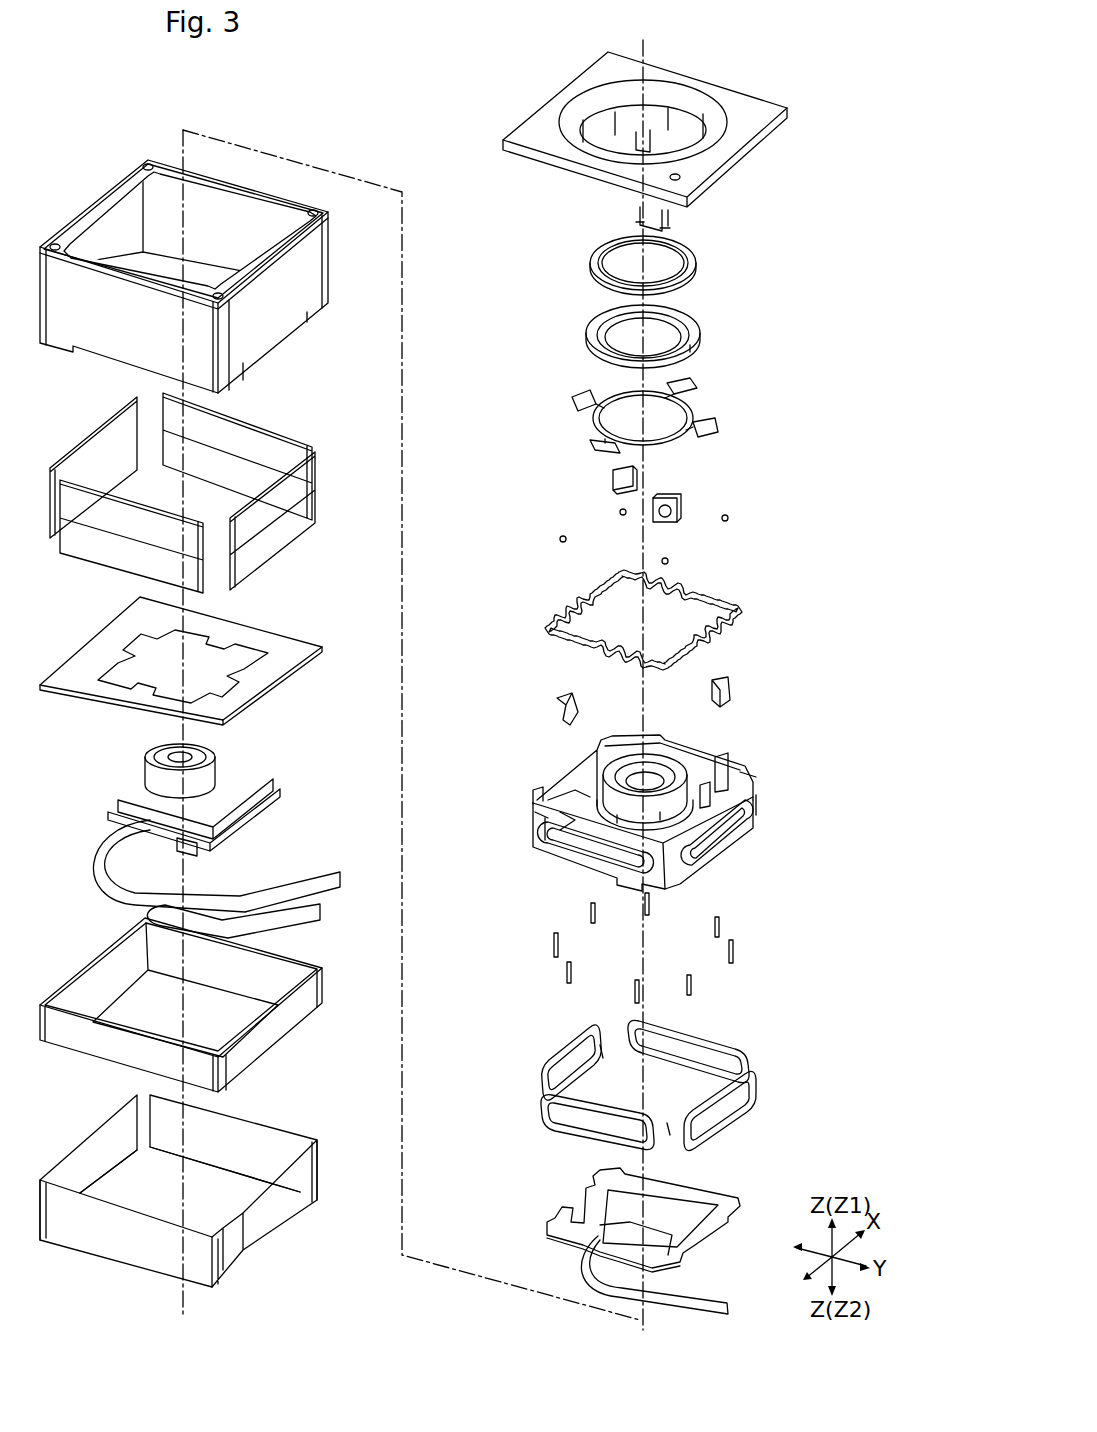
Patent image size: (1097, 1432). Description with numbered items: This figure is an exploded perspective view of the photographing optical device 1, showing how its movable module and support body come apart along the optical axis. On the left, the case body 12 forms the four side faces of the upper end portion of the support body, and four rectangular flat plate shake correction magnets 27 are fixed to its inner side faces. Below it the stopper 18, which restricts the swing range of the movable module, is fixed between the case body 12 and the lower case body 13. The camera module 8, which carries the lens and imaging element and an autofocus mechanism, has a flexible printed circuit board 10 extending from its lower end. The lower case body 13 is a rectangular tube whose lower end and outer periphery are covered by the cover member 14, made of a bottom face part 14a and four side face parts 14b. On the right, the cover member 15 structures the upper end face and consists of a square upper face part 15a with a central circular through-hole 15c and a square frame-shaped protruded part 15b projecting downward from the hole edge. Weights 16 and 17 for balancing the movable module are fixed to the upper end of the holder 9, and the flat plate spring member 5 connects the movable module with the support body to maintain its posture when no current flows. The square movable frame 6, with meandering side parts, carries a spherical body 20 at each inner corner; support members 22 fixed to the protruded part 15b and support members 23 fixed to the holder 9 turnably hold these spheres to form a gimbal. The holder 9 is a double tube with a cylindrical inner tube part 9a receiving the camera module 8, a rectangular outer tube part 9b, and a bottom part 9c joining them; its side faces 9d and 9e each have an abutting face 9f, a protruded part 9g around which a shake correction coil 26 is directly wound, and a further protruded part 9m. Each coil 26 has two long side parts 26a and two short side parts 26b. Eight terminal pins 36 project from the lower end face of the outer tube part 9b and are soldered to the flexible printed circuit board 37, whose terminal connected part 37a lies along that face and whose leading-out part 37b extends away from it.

The photographing optical device 1 is at (86, 88).
The case body 12 is at (330, 263).
The shake correction magnet 27 is at (85, 430).
The stopper 18 is at (297, 637).
The camera module 8 is at (223, 763).
The flexible printed circuit board 10 is at (310, 868).
The lower case body 13 is at (297, 1033).
The cover member 14 is at (186, 1176).
The bottom face part 14a is at (160, 1195).
The side face part 14b is at (72, 1176).
The cover member 15 is at (674, 139).
The upper face part 15a is at (540, 107).
The protruded part 15b is at (603, 147).
The through-hole 15c is at (677, 107).
The weight 16 is at (703, 263).
The weight 17 is at (703, 332).
The spring member 5 is at (717, 428).
The support member 22 is at (612, 477).
The spherical body 20 is at (619, 512).
The movable frame 6 is at (740, 612).
The support member 23 is at (552, 702).
The holder 9 is at (646, 793).
The inner tube part 9a is at (618, 740).
The outer tube part 9b is at (646, 793).
The bottom part 9c is at (583, 795).
The side face 9d is at (540, 817).
The side face 9e is at (805, 764).
The abutting face 9f is at (763, 790).
The protruded part 9g is at (757, 790).
The protruded part 9m is at (750, 820).
The terminal pin 36 is at (590, 910).
The shake correction coil 26 is at (648, 1089).
The long side part 26a is at (573, 1052).
The short side part 26b is at (608, 1043).
The flexible printed circuit board 37 is at (599, 1241).
The terminal connected part 37a is at (542, 1220).
The leading-out part 37b is at (713, 1295).